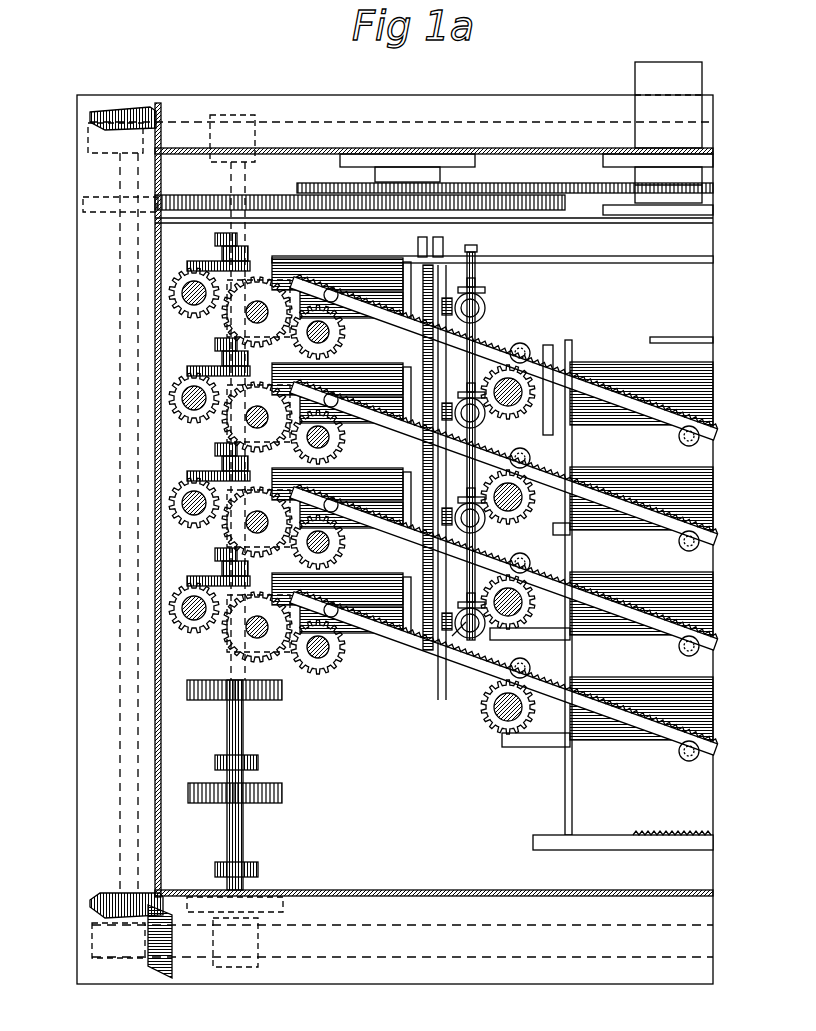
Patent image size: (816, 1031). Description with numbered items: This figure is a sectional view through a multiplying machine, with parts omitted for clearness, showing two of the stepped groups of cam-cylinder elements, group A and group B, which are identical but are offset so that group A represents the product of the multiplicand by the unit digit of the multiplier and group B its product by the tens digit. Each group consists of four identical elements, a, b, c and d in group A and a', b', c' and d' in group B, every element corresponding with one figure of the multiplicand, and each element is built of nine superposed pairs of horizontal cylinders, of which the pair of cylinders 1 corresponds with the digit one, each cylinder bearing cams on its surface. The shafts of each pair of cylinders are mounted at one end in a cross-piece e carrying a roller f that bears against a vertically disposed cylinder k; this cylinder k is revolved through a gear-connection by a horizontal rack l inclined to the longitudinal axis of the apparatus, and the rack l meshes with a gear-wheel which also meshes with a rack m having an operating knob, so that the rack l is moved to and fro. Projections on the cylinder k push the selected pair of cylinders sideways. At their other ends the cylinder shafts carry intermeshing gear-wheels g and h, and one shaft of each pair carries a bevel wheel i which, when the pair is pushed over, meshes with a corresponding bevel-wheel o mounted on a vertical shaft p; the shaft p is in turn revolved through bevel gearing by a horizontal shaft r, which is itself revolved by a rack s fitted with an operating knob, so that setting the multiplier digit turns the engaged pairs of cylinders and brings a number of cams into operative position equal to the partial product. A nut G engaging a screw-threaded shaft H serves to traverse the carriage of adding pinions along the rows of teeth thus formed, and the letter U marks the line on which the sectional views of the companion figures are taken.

The rack s is at (681, 70).
The cylinder k is at (194, 276).
The roller f is at (218, 330).
The element a is at (329, 332).
The element b is at (327, 437).
The element c is at (332, 542).
The element d is at (329, 651).
The element a' is at (504, 364).
The element b' is at (504, 470).
The element c' is at (504, 574).
The element d' is at (504, 682).
The cross-piece e is at (508, 549).
The gear-wheel g is at (422, 358).
The gear-wheel h is at (352, 493).
The bevel wheel i is at (459, 437).
The horizontal shaft r is at (478, 270).
The bevel-wheel o is at (486, 303).
The rack l is at (518, 343).
The rack m is at (620, 855).
The vertical shaft p is at (455, 645).
The pair of cylinders 1 is at (400, 272).
The group A is at (434, 500).
The group B is at (641, 587).
The screw-threaded shaft H is at (434, 909).
The nut G is at (235, 942).
The section line U is at (190, 673).